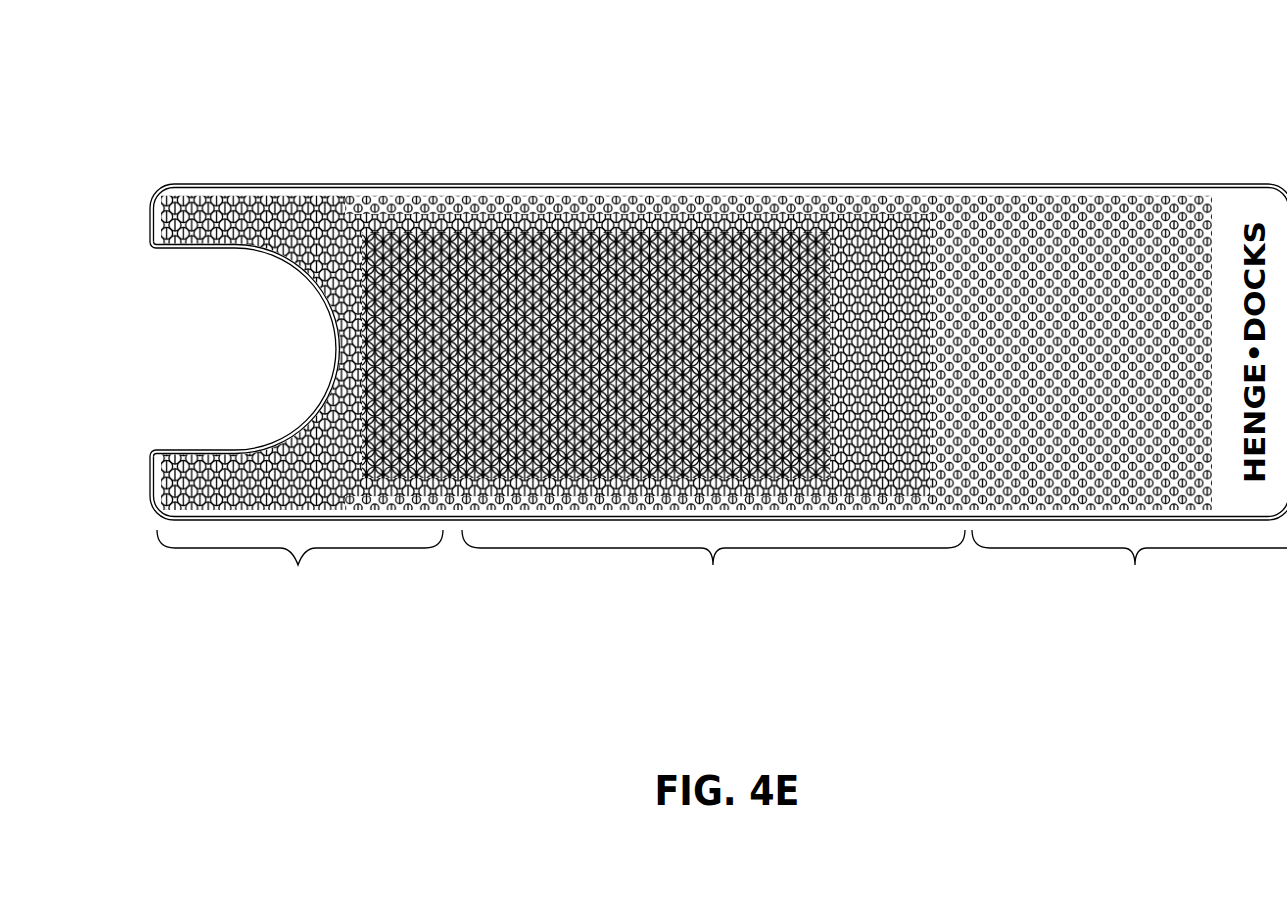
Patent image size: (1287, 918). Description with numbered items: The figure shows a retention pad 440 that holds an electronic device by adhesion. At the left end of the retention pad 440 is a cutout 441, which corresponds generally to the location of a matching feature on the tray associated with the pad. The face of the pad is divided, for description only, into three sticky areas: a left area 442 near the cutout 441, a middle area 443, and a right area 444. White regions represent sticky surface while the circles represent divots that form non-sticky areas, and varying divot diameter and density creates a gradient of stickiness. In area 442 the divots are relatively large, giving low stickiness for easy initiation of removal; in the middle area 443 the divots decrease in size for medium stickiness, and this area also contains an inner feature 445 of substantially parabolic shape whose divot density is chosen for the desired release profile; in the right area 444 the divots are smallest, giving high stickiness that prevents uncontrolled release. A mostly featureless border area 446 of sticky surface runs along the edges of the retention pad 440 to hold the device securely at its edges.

The retention pad 440 is at (353, 693).
The cutout 441 is at (244, 349).
The sticky area 442 is at (300, 569).
The sticky area 443 is at (713, 569).
The sticky area 444 is at (1129, 565).
The inner feature 445 is at (686, 353).
The border area 446 is at (727, 192).